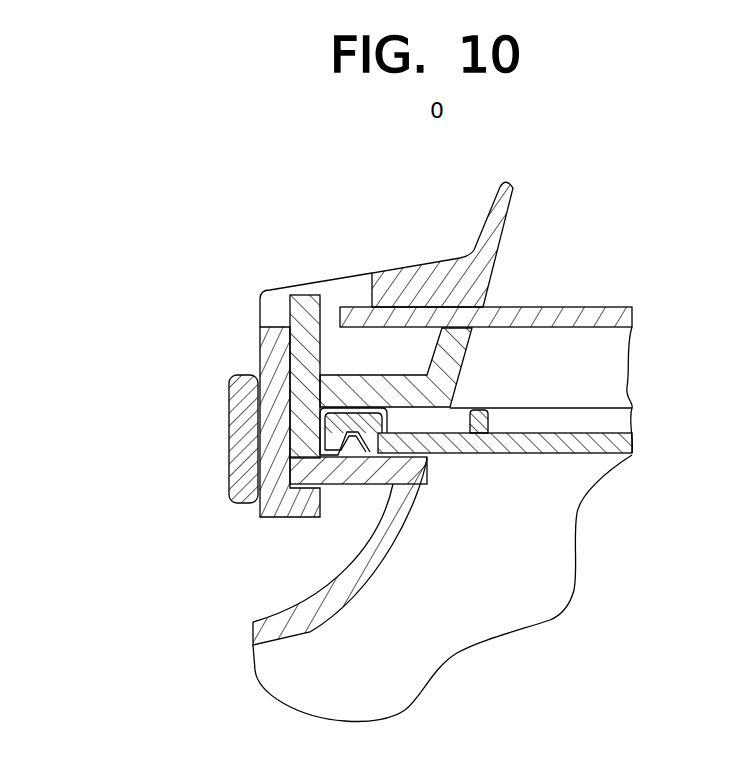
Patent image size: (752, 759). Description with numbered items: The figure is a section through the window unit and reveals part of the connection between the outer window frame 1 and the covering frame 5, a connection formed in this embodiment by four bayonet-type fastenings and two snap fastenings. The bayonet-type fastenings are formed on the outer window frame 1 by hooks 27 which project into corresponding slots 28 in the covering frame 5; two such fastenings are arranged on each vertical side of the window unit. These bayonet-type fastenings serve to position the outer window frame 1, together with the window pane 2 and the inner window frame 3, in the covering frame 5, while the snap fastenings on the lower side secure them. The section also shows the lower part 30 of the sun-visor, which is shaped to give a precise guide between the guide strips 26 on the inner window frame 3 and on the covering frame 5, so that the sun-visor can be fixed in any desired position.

The outer window frame 1 is at (441, 276).
The window pane 2 is at (588, 320).
The inner window frame 3 is at (356, 386).
The covering frame 5 is at (327, 606).
The guide strips 26 is at (357, 448).
The hooks 27 is at (270, 343).
The slots 28 is at (242, 443).
The lower part of the sun-visor 30 is at (580, 440).